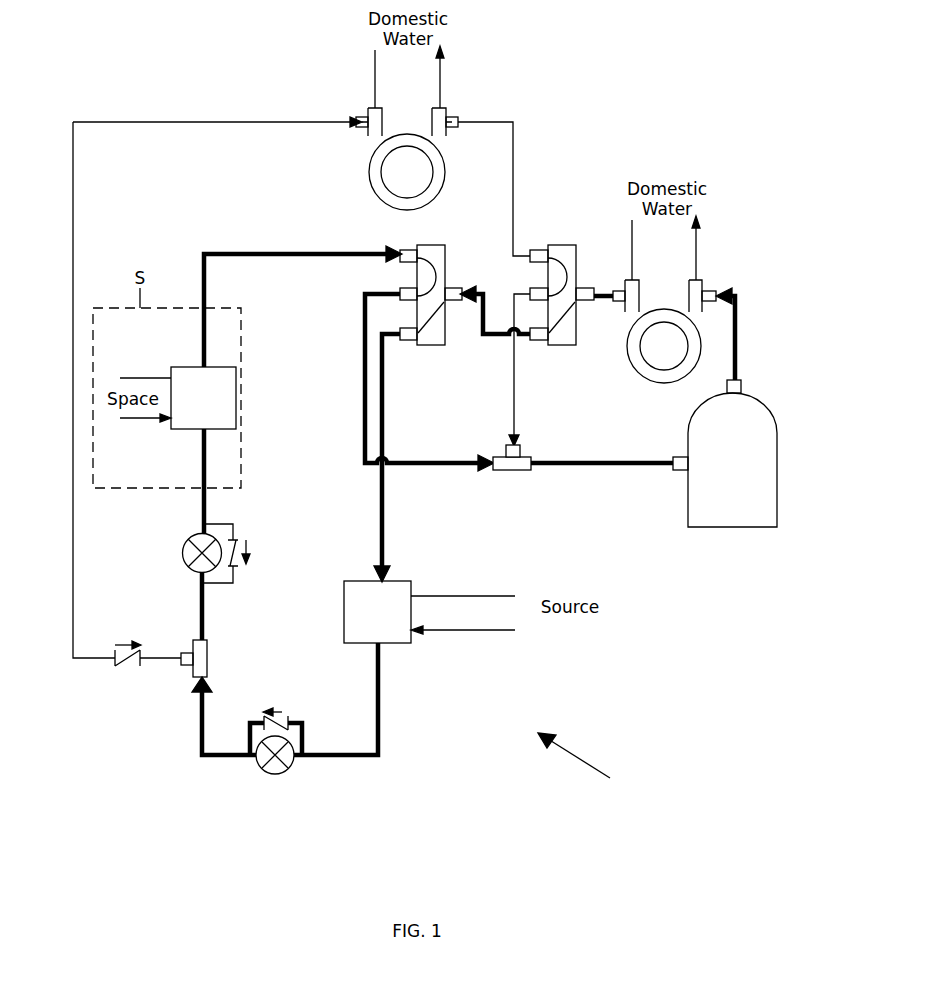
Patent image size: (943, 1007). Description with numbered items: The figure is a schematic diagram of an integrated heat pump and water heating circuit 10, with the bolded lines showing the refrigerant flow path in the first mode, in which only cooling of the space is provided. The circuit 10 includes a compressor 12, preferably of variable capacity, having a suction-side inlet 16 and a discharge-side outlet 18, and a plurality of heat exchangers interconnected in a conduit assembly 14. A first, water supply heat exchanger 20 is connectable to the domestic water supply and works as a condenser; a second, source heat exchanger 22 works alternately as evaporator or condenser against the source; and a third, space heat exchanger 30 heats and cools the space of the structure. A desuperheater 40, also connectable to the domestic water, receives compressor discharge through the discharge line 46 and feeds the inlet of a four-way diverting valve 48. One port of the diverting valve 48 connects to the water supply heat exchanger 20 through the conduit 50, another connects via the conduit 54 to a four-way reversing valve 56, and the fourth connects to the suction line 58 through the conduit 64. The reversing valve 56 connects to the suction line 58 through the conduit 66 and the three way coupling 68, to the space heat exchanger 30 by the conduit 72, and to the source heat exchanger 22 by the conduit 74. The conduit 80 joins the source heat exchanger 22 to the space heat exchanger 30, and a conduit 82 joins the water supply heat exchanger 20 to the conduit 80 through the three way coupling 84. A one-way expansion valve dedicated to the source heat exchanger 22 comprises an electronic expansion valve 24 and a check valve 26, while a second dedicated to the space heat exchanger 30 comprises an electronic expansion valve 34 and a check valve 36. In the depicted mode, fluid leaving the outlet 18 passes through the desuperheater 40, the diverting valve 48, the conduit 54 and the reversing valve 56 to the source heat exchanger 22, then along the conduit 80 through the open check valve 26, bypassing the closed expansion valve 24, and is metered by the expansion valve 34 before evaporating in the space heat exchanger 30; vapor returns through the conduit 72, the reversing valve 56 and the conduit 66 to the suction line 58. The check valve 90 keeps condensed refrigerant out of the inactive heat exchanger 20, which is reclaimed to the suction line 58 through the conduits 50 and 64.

The circuit 10 is at (592, 764).
The compressor 12 is at (777, 467).
The conduit assembly 14 is at (220, 122).
The inlet 16 is at (675, 470).
The outlet 18 is at (742, 384).
The first heat exchanger 20 is at (368, 180).
The second heat exchanger 22 is at (344, 612).
The electronic expansion valve 24 is at (275, 774).
The check valve 26 is at (286, 715).
The third heat exchanger 30 is at (236, 401).
The electronic expansion valve 34 is at (182, 553).
The check valve 36 is at (240, 538).
The desuperheater 40 is at (662, 383).
The discharge line 46 is at (737, 339).
The four-way diverting valve 48 is at (563, 245).
The conduit 50 is at (513, 170).
The conduit 54 is at (483, 337).
The four-way reversing valve 56 is at (443, 244).
The suction line 58 is at (598, 460).
The conduit 64 is at (516, 378).
The conduit 66 is at (430, 460).
The three way coupling 68 is at (511, 471).
The conduit 72 is at (267, 252).
The conduit 74 is at (385, 505).
The conduit 80 is at (198, 737).
The conduit 82 is at (70, 553).
The three way coupling 84 is at (209, 660).
The check valve 90 is at (127, 668).